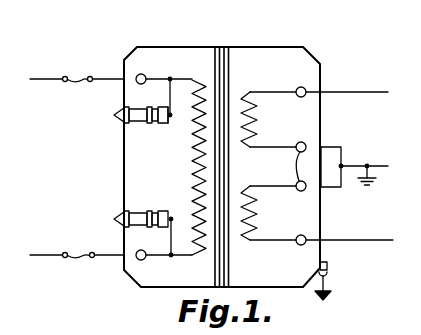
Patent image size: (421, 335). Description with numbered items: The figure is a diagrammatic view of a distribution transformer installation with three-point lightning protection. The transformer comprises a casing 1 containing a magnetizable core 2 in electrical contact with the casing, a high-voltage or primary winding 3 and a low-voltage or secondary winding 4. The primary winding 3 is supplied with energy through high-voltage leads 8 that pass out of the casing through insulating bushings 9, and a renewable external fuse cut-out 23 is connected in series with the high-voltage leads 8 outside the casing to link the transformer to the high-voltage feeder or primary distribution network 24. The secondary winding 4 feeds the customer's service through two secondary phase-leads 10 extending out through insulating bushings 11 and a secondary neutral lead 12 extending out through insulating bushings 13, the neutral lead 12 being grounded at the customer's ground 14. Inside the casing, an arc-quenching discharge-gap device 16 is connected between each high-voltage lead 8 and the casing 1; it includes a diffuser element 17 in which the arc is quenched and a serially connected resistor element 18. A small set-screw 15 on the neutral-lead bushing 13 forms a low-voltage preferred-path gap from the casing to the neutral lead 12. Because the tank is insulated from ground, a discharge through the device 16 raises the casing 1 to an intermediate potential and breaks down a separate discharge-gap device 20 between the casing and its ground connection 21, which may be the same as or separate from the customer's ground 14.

The casing 1 is at (272, 47).
The magnetizable core 2 is at (237, 47).
The high-voltage winding 3 is at (198, 165).
The low-voltage winding 4 is at (252, 124).
The high-voltage leads 8 is at (157, 79).
The insulating bushings 9 is at (138, 74).
The secondary phase-leads 10 is at (280, 92).
The insulating bushings 11 is at (306, 95).
The secondary neutral lead 12 is at (330, 147).
The insulating bushings 13 is at (301, 142).
The ground 14 is at (371, 179).
The set-screw 15 is at (297, 160).
The arc-quenching discharge-gap device 16 is at (147, 123).
The diffuser element 17 is at (131, 123).
The resistor element 18 is at (161, 123).
The discharge-gap device 20 is at (328, 268).
The ground connection 21 is at (327, 284).
The renewable external fuse cut-out 23 is at (80, 82).
The high-voltage feeder 24 is at (42, 80).